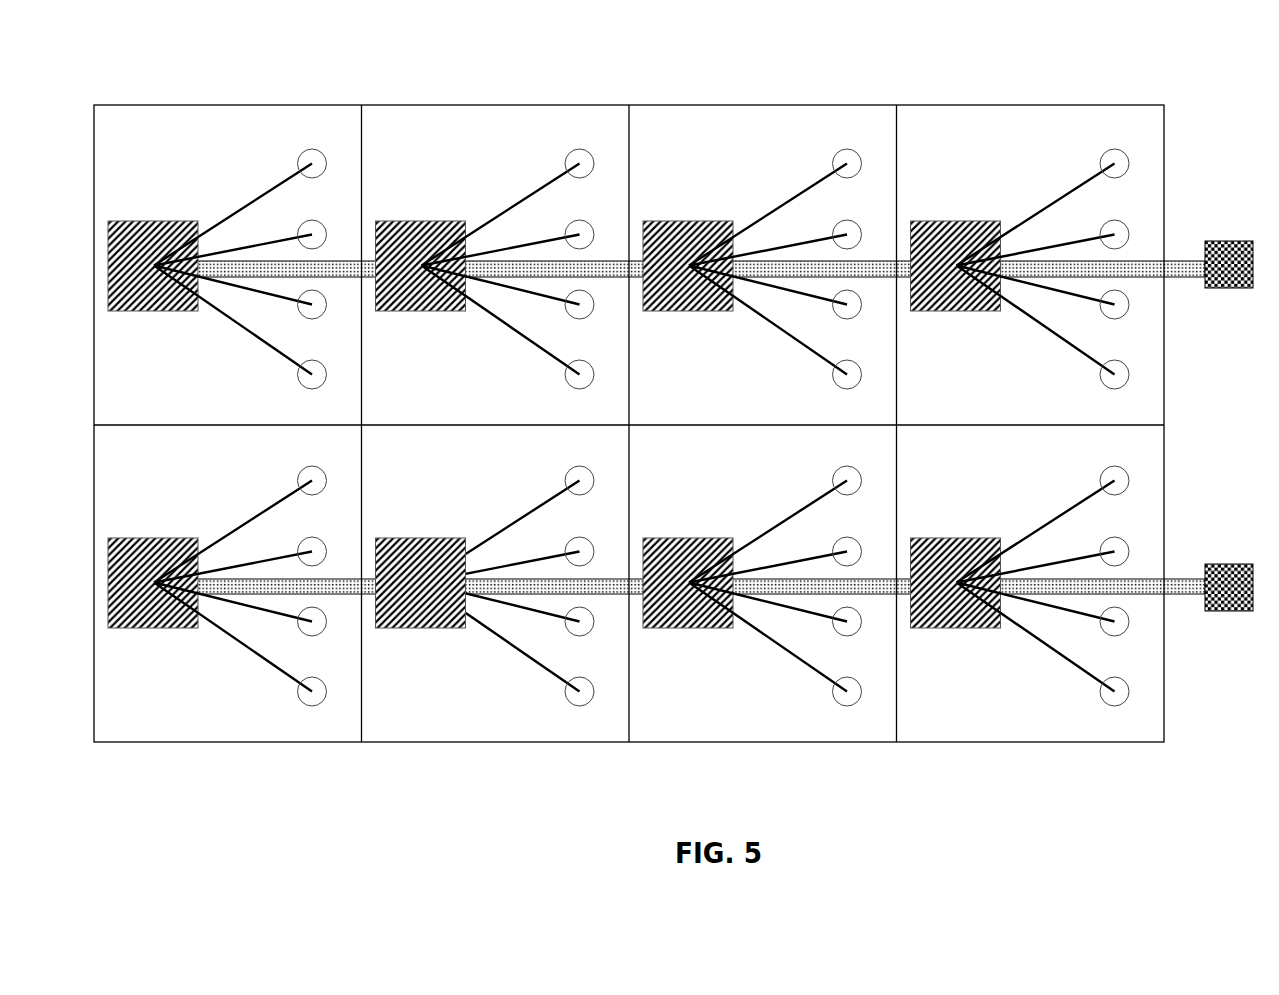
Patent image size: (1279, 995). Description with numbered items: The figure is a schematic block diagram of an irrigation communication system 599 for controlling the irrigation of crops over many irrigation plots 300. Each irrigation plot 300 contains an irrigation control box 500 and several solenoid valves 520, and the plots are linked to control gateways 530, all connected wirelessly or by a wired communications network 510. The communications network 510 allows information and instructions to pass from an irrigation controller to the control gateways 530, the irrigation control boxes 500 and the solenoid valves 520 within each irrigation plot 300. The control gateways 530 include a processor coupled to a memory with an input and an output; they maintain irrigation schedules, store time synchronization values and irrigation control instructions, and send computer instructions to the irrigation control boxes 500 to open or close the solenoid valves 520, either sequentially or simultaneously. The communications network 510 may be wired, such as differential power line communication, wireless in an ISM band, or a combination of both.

The irrigation communication system 599 is at (679, 413).
The irrigation plot 300 is at (184, 754).
The irrigation control box 500 is at (140, 636).
The communications network 510 is at (514, 662).
The solenoid valve 520 is at (874, 625).
The control gateway 530 is at (1233, 621).